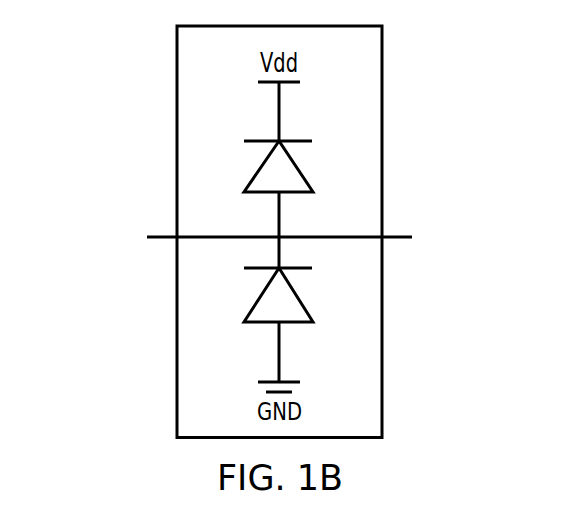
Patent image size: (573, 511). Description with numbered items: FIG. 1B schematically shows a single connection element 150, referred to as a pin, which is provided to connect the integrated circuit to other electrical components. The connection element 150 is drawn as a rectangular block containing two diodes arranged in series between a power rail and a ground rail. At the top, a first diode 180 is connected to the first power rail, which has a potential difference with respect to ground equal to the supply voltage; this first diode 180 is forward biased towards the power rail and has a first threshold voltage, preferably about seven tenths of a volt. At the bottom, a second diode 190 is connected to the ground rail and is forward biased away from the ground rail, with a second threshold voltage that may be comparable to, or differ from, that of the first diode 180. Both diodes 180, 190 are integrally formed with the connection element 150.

The connection element 150 is at (177, 161).
The first diode 180 is at (304, 177).
The second diode 190 is at (304, 307).